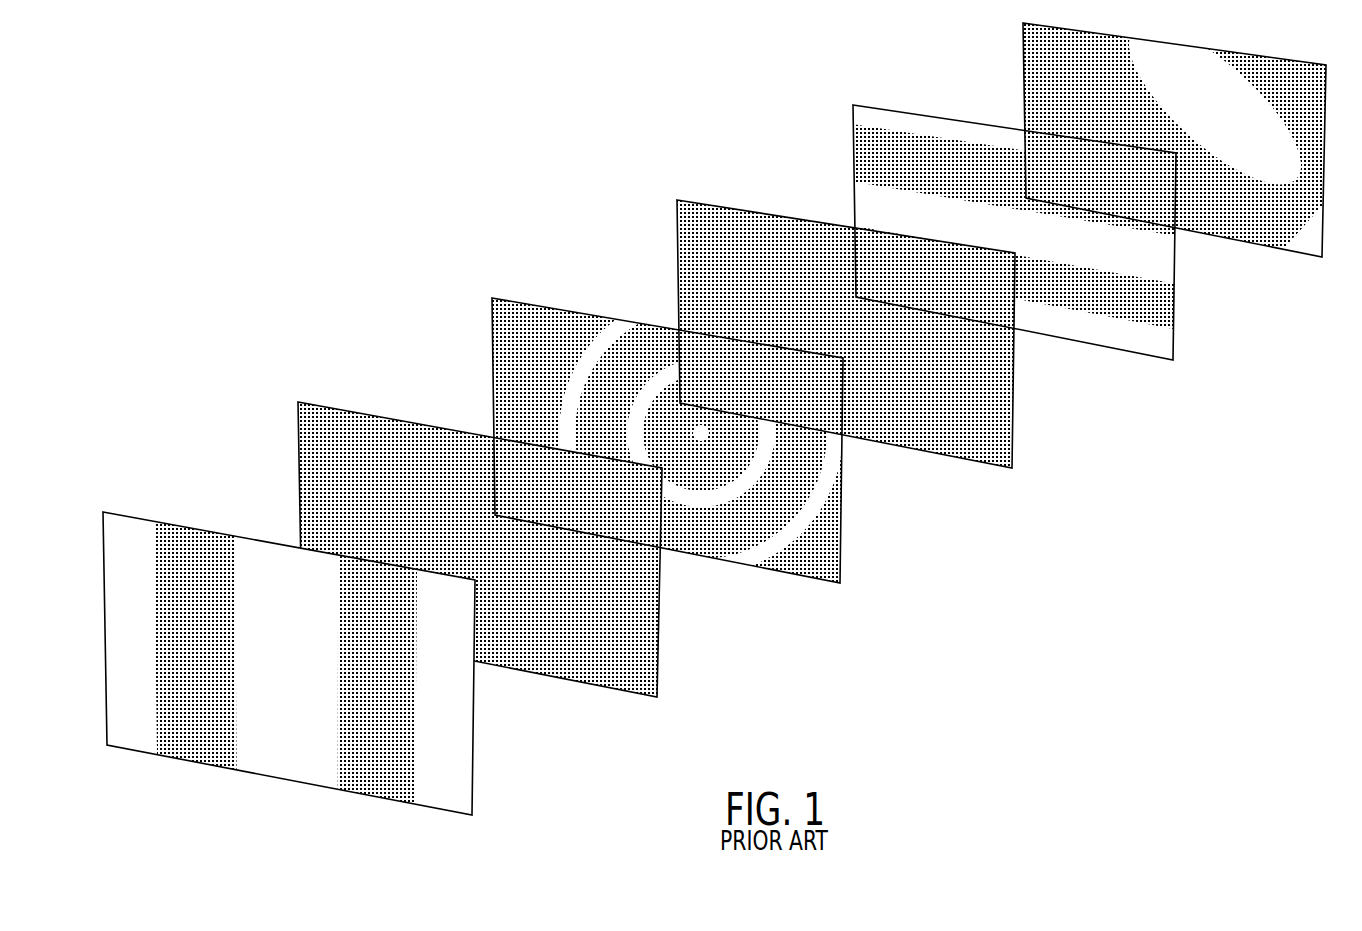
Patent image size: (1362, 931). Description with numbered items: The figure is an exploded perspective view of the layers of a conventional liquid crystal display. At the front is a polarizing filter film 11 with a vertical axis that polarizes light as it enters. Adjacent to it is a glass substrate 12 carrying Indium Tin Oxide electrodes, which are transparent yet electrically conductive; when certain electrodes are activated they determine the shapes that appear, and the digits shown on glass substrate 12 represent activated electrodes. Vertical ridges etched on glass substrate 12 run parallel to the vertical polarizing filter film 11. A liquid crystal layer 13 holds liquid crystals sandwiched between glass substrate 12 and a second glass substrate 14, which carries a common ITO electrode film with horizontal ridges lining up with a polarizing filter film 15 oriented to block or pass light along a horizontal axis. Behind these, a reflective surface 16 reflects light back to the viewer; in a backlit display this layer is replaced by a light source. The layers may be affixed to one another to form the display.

The polarizing filter film 11 is at (300, 665).
The glass substrate 12 is at (491, 554).
The liquid crystal layer 13 is at (673, 440).
The glass substrate 14 is at (858, 336).
The polarizing filter film 15 is at (1027, 237).
The reflective surface 16 is at (1176, 140).